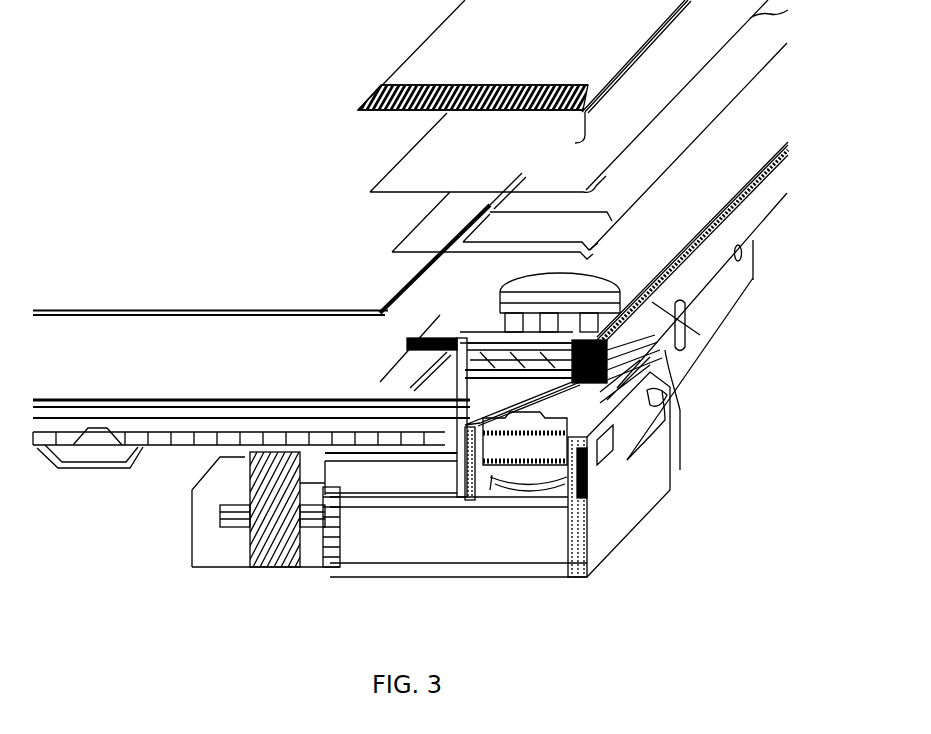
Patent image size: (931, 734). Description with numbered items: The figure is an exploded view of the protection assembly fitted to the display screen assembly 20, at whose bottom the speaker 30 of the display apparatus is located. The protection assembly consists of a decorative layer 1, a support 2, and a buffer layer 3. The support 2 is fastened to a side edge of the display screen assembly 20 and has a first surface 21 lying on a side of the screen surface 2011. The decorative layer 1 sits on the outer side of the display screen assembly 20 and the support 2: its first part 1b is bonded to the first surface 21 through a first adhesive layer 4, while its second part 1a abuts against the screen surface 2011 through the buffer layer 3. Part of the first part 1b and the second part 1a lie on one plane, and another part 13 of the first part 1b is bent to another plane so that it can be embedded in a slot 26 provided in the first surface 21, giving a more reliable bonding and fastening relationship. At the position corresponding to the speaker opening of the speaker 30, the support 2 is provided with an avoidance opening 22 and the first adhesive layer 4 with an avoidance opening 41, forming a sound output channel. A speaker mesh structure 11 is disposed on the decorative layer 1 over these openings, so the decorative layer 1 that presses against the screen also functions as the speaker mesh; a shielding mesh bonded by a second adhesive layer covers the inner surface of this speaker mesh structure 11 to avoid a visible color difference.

The decorative layer 1 is at (440, 46).
The second part 1a is at (372, 93).
The speaker mesh structure 11 is at (390, 83).
The first part 1b is at (580, 70).
The another part 13 is at (575, 143).
The first adhesive layer 4 is at (416, 238).
The avoidance opening 41 is at (608, 192).
The buffer layer 3 is at (407, 273).
The screen surface 2011 is at (215, 313).
The first surface 21 is at (437, 320).
The avoidance opening 22 is at (628, 282).
The support 2 is at (688, 343).
The slot 26 is at (673, 390).
The display screen assembly 20 is at (123, 485).
The speaker 30 is at (491, 555).